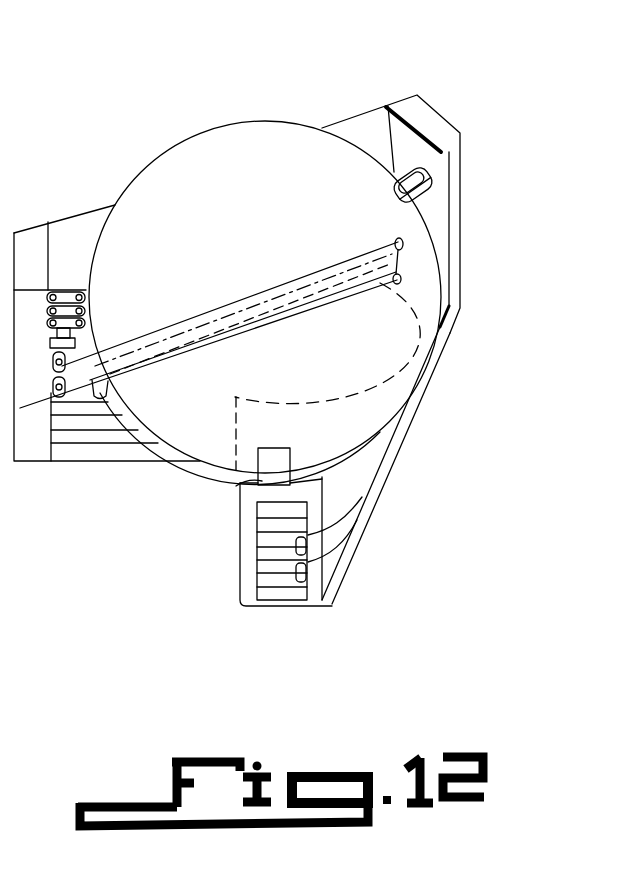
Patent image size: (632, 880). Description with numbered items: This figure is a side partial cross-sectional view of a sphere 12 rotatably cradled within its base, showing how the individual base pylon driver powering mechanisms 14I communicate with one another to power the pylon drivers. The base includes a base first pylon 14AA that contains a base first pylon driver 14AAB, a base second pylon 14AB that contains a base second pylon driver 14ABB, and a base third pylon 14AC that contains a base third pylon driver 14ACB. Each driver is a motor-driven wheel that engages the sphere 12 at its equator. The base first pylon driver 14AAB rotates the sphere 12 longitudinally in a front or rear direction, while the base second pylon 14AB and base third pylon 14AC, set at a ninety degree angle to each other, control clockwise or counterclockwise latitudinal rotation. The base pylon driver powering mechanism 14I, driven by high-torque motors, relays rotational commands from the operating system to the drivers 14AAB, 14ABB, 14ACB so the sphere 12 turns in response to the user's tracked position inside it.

The sphere 12 is at (262, 120).
The base first pylon 14AA is at (470, 188).
The base first pylon driver 14AAB is at (416, 163).
The base second pylon 14AB is at (67, 473).
The base second pylon driver 14ABB is at (86, 292).
The base third pylon 14AC is at (285, 616).
The base third pylon driver 14ACB is at (240, 483).
The base pylon driver powering mechanism 14I is at (356, 508).